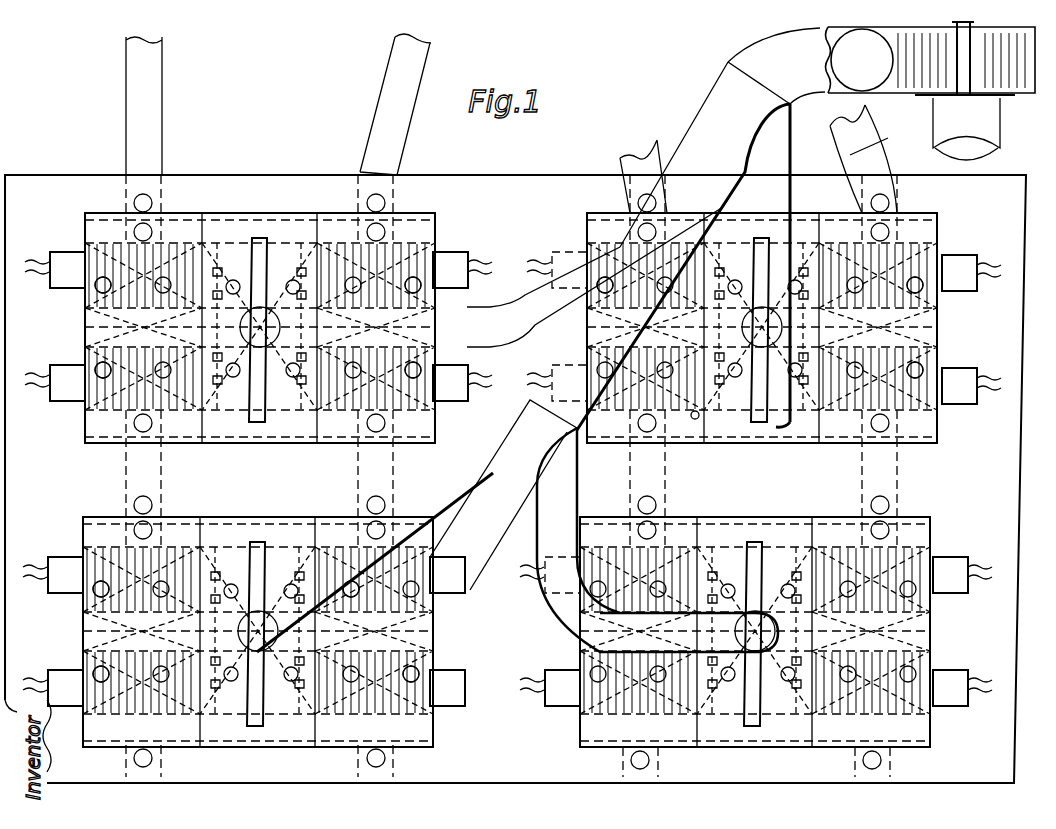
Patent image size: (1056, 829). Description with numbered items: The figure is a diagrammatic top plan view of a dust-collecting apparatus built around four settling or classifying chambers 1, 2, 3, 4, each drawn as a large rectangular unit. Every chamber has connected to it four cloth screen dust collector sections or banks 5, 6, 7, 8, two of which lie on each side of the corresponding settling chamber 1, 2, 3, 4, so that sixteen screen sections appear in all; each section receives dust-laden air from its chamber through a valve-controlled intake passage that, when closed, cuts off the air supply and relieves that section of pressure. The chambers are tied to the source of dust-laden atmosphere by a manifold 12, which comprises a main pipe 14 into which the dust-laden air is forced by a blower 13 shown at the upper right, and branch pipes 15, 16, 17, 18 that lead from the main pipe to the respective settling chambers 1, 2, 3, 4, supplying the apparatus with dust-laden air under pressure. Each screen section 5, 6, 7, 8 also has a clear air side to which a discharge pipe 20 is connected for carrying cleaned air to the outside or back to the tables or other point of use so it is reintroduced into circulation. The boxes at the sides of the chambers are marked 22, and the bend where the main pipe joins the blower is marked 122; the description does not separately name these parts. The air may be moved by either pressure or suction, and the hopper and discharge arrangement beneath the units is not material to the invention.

The settling chamber 1 is at (293, 238).
The settling chamber 2 is at (793, 233).
The settling chamber 3 is at (293, 560).
The settling chamber 4 is at (790, 565).
The cloth screen dust collector section 5 is at (123, 282).
The cloth screen dust collector section 6 is at (90, 348).
The cloth screen dust collector section 7 is at (433, 257).
The cloth screen dust collector section 8 is at (427, 407).
The manifold 12 is at (719, 173).
The blower 13 is at (433, 218).
The main pipe 14 is at (690, 110).
The branch pipe 15 is at (525, 302).
The branch pipe 16 is at (683, 267).
The branch pipe 17 is at (455, 510).
The branch pipe 18 is at (1022, 110).
The discharge pipe 20 is at (126, 95).
The side connection box 22 is at (63, 252).
The blower inlet bend 122 is at (777, 63).